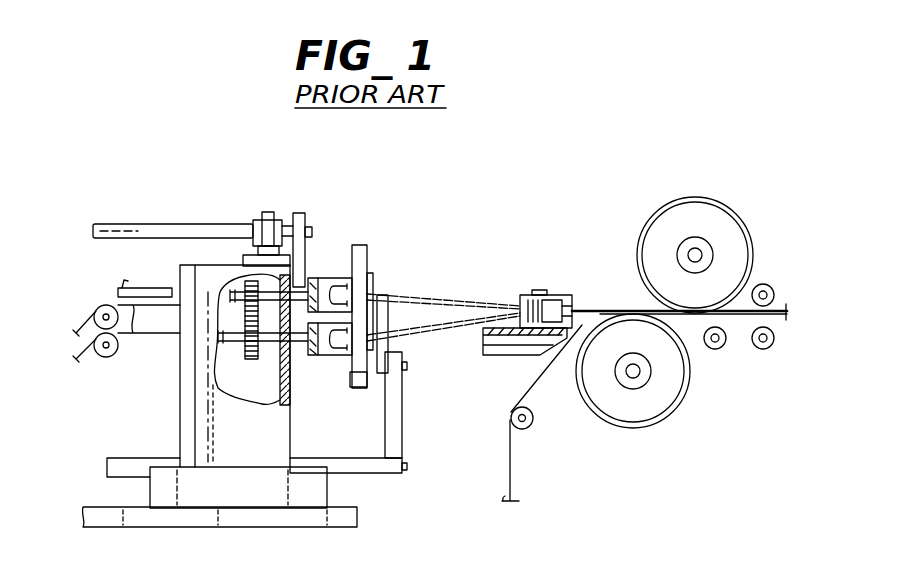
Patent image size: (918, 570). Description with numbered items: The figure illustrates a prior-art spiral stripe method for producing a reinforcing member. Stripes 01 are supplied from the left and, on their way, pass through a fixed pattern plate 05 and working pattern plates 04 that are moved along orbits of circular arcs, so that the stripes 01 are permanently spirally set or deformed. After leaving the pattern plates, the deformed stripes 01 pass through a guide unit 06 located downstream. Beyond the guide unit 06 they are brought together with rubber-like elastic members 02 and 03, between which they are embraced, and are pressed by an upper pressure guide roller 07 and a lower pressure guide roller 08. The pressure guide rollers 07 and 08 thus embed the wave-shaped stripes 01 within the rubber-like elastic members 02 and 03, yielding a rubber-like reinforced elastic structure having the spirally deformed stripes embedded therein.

The stripes 01 is at (152, 333).
The rubber-like elastic member 02 is at (683, 193).
The rubber-like elastic member 03 is at (545, 380).
The working pattern plates 04 is at (375, 296).
The fixed pattern plate 05 is at (380, 297).
The guide unit 06 is at (556, 292).
The upper pressure guide roller 07 is at (722, 200).
The lower pressure guide roller 08 is at (678, 407).